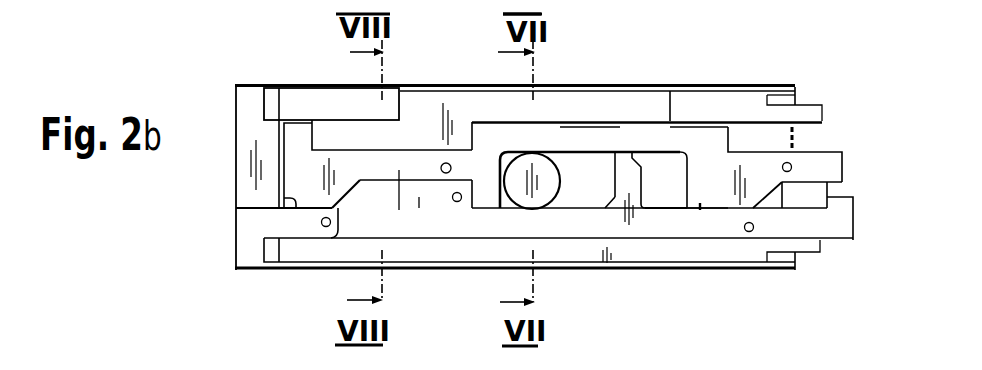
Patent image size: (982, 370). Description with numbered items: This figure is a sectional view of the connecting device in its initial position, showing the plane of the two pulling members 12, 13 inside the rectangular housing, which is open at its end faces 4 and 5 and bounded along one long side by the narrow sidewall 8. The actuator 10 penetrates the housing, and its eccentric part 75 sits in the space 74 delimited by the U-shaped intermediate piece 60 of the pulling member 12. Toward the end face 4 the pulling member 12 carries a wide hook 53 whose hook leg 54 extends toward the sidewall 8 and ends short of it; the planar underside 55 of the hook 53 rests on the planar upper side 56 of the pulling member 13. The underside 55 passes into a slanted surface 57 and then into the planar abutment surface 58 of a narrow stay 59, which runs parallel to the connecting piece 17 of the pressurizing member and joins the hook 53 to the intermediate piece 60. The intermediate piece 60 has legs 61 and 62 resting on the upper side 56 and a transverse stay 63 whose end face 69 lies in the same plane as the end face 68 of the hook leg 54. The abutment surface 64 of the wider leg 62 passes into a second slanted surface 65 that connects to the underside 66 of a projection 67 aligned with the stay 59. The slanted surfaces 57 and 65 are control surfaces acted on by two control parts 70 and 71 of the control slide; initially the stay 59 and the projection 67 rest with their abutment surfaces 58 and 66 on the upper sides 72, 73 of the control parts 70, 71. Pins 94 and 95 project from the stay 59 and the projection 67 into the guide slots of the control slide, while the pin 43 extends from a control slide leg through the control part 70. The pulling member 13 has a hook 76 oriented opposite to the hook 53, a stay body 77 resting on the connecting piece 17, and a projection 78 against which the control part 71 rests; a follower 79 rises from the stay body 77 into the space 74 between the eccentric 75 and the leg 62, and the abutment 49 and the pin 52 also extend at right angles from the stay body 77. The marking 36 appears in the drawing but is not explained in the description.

The end face 4 is at (236, 98).
The end face 5 is at (795, 91).
The narrow sidewall 8 is at (252, 83).
The actuator 10 is at (551, 200).
The pulling member 12 is at (575, 128).
The pulling member 13 is at (545, 232).
The connecting piece 17 is at (662, 197).
The section indicator 36 is at (504, 14).
The pin 43 is at (456, 201).
The abutment 49 is at (747, 231).
The pin 52 is at (322, 224).
The hook 53 is at (295, 145).
The hook leg 54 is at (297, 130).
The underside 55 is at (292, 202).
The upper side 56 is at (240, 207).
The slanted surface 57 is at (338, 227).
The abutment surface 58 is at (377, 180).
The stay 59 is at (399, 210).
The intermediate piece 60 is at (602, 138).
The leg 61 is at (478, 176).
The leg 62 is at (698, 152).
The transverse stay 63 is at (498, 140).
The abutment surface 64 is at (701, 208).
The slanted surface 65 is at (757, 207).
The underside 66 is at (842, 185).
The projection 67 is at (822, 167).
The end face 68 is at (293, 121).
The end face 69 is at (548, 122).
The control part 70 is at (419, 208).
The control part 71 is at (808, 203).
The upper side 72 is at (365, 180).
The upper side 73 is at (798, 180).
The space 74 is at (655, 197).
The eccentric part 75 is at (513, 193).
The hook 76 is at (242, 228).
The stay body 77 is at (517, 212).
The projection 78 is at (842, 207).
The follower 79 is at (627, 168).
The pin 94 is at (444, 164).
The pin 95 is at (785, 163).